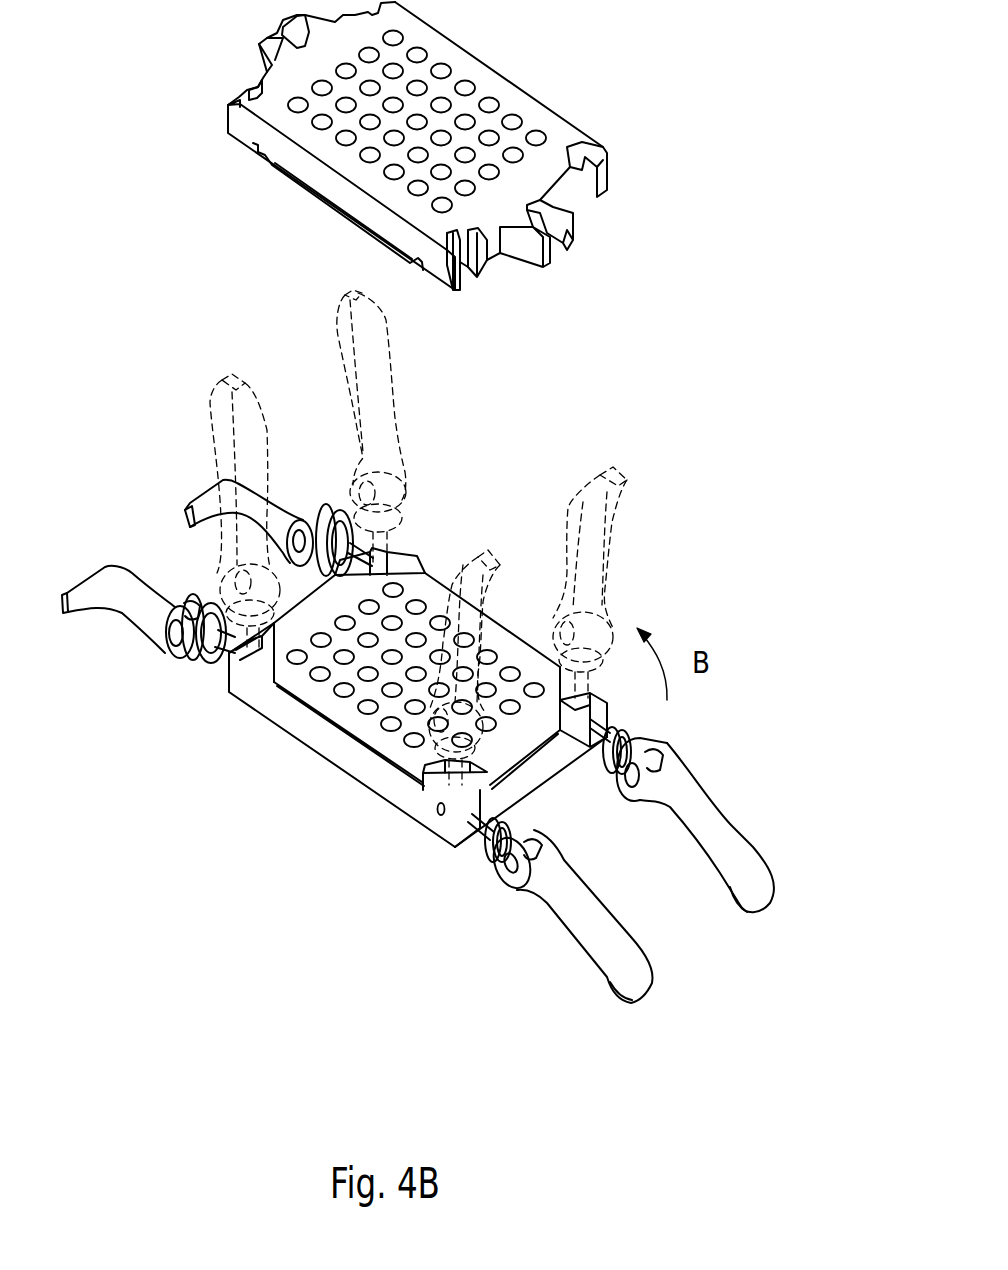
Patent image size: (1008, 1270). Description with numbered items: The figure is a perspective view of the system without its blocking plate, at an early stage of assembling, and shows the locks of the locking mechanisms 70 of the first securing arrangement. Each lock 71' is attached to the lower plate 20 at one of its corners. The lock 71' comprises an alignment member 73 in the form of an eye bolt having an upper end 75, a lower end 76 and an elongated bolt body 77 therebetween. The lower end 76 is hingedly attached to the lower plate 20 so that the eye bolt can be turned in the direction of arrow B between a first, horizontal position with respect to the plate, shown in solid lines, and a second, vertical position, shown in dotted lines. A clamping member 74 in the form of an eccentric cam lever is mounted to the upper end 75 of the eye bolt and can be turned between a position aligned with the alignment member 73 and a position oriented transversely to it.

The lower plate 20 is at (333, 750).
The locking mechanism 70 is at (612, 198).
The lock 71' is at (463, 781).
The alignment member 73 is at (522, 843).
The clamping member 74 is at (632, 957).
The upper end 75 is at (522, 840).
The lower end 76 is at (440, 812).
The elongated bolt body 77 is at (472, 818).